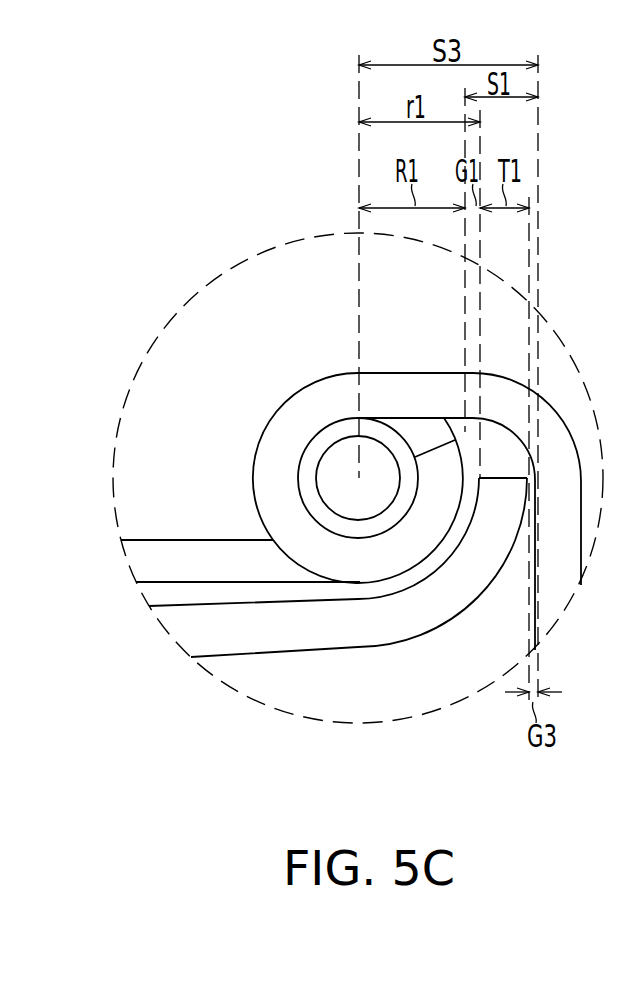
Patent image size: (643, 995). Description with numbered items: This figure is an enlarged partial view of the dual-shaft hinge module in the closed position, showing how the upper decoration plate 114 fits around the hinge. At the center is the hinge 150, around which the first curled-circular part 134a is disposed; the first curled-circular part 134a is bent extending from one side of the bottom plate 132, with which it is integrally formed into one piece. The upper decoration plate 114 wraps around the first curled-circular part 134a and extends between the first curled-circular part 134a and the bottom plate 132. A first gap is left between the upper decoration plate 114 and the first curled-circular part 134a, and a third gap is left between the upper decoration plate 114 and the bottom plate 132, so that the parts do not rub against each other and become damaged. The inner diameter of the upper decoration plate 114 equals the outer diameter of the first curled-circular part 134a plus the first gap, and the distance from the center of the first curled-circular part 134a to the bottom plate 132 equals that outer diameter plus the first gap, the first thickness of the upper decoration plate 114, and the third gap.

The hinge 150 is at (338, 462).
The first curled-circular part 134a is at (372, 560).
The bottom plate 132 is at (562, 587).
The upper decoration plate 114 is at (440, 603).